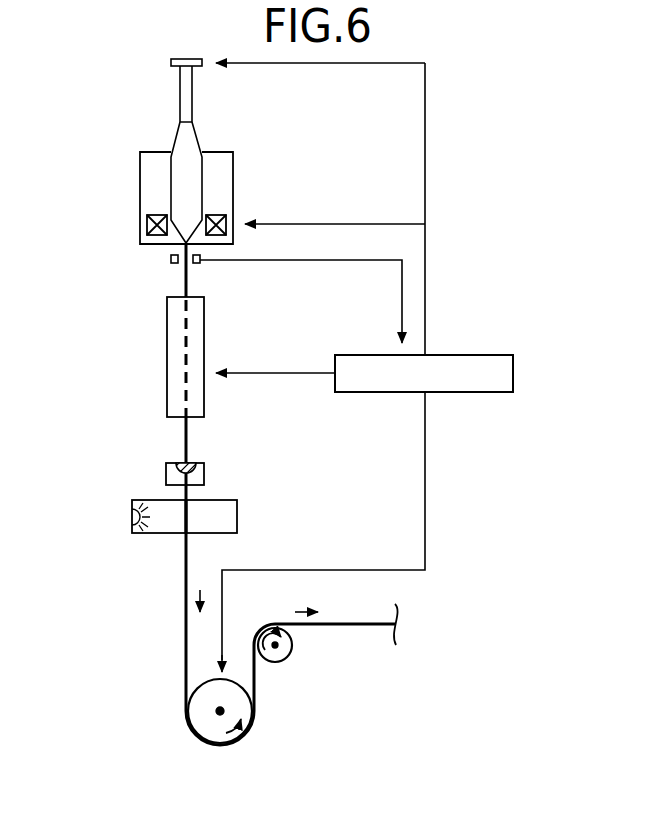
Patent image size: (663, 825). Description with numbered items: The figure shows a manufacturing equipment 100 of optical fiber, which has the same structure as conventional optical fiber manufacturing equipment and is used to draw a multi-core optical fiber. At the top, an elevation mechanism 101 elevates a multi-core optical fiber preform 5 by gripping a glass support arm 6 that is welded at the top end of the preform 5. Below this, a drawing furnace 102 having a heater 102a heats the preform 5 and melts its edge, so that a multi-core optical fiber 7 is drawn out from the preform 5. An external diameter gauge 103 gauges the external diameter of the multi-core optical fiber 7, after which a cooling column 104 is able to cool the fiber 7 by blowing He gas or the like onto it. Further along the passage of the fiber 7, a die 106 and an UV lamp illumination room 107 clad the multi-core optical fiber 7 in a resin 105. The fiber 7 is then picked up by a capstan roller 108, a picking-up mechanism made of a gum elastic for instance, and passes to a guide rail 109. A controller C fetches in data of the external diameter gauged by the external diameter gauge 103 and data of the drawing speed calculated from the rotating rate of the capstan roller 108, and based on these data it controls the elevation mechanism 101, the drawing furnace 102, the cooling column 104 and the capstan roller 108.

The manufacturing equipment of optical fiber 100 is at (499, 131).
The elevation mechanism 101 is at (170, 63).
The glass support arm 6 is at (180, 103).
The multi-core optical fiber preform 5 is at (202, 181).
The drawing furnace 102 is at (138, 175).
The heater 102a is at (147, 226).
The external diameter gauge 103 is at (171, 258).
The multi-core optical fiber 7 is at (189, 280).
The cooling column 104 is at (167, 350).
The resin 105 is at (191, 458).
The die 106 is at (166, 470).
The UV lamp illumination room 107 is at (132, 516).
The capstan roller 108 is at (231, 675).
The guide rail 109 is at (293, 645).
The controller C is at (513, 373).